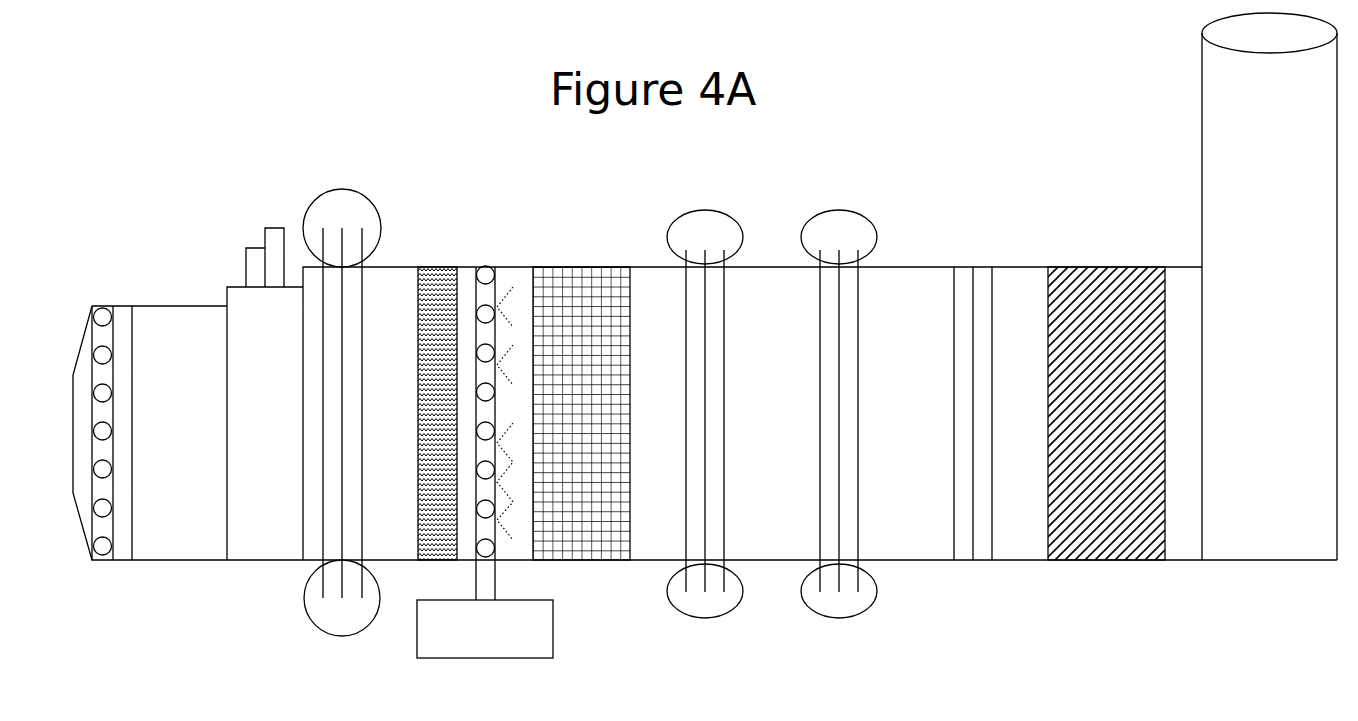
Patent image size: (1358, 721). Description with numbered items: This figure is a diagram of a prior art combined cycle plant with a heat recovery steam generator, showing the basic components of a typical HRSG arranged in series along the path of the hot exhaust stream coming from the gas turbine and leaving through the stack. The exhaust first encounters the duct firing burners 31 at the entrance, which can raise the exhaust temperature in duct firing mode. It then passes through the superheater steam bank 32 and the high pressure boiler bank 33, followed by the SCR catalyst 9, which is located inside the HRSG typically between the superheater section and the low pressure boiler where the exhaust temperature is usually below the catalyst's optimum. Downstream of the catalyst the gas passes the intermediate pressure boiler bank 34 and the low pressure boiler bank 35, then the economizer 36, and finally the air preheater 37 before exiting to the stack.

The SCR catalyst 9 is at (581, 401).
The duct firing burners 31 is at (102, 420).
The superheater steam bank 32 is at (263, 244).
The high pressure boiler bank 33 is at (342, 401).
The intermediate pressure boiler bank 34 is at (705, 400).
The low pressure boiler bank 35 is at (839, 400).
The economizer 36 is at (970, 401).
The air preheater 37 is at (1106, 401).